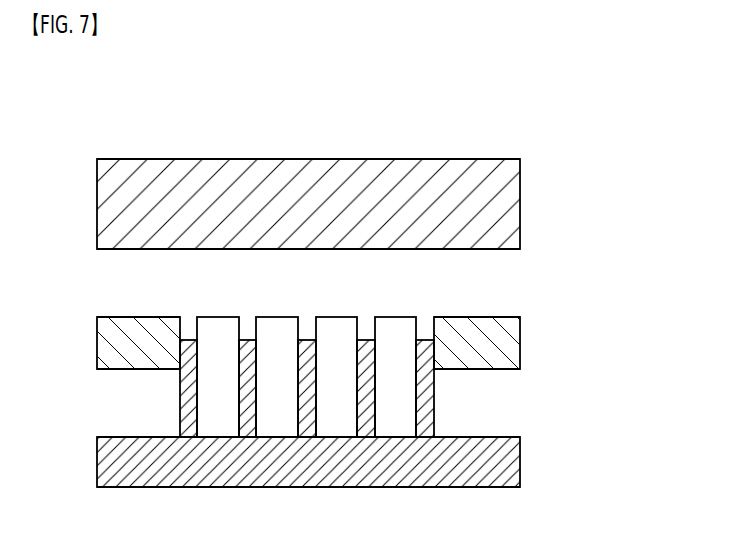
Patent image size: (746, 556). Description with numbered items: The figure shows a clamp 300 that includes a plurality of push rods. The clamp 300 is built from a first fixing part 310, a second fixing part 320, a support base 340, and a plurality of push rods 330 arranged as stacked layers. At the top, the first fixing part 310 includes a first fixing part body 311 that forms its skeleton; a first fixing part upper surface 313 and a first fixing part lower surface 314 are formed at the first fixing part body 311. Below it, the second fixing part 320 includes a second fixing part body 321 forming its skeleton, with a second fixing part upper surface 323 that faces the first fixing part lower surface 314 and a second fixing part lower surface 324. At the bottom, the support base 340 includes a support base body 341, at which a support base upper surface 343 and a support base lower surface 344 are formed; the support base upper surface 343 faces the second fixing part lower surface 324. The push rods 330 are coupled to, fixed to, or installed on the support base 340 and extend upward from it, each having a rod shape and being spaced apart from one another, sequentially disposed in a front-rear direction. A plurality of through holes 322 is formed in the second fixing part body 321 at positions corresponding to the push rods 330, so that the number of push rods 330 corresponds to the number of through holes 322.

The clamp 300 is at (78, 120).
The first fixing part 310 is at (507, 207).
The first fixing part body 311 is at (400, 202).
The first fixing part upper surface 313 is at (452, 158).
The first fixing part lower surface 314 is at (195, 248).
The second fixing part 320 is at (507, 345).
The second fixing part body 321 is at (138, 342).
The through hole 322 is at (302, 331).
The second fixing part upper surface 323 is at (145, 318).
The second fixing part lower surface 324 is at (130, 368).
The push rod 330 is at (367, 385).
The support base 340 is at (507, 460).
The support base body 341 is at (112, 467).
The support base upper surface 343 is at (147, 438).
The support base lower surface 344 is at (157, 488).